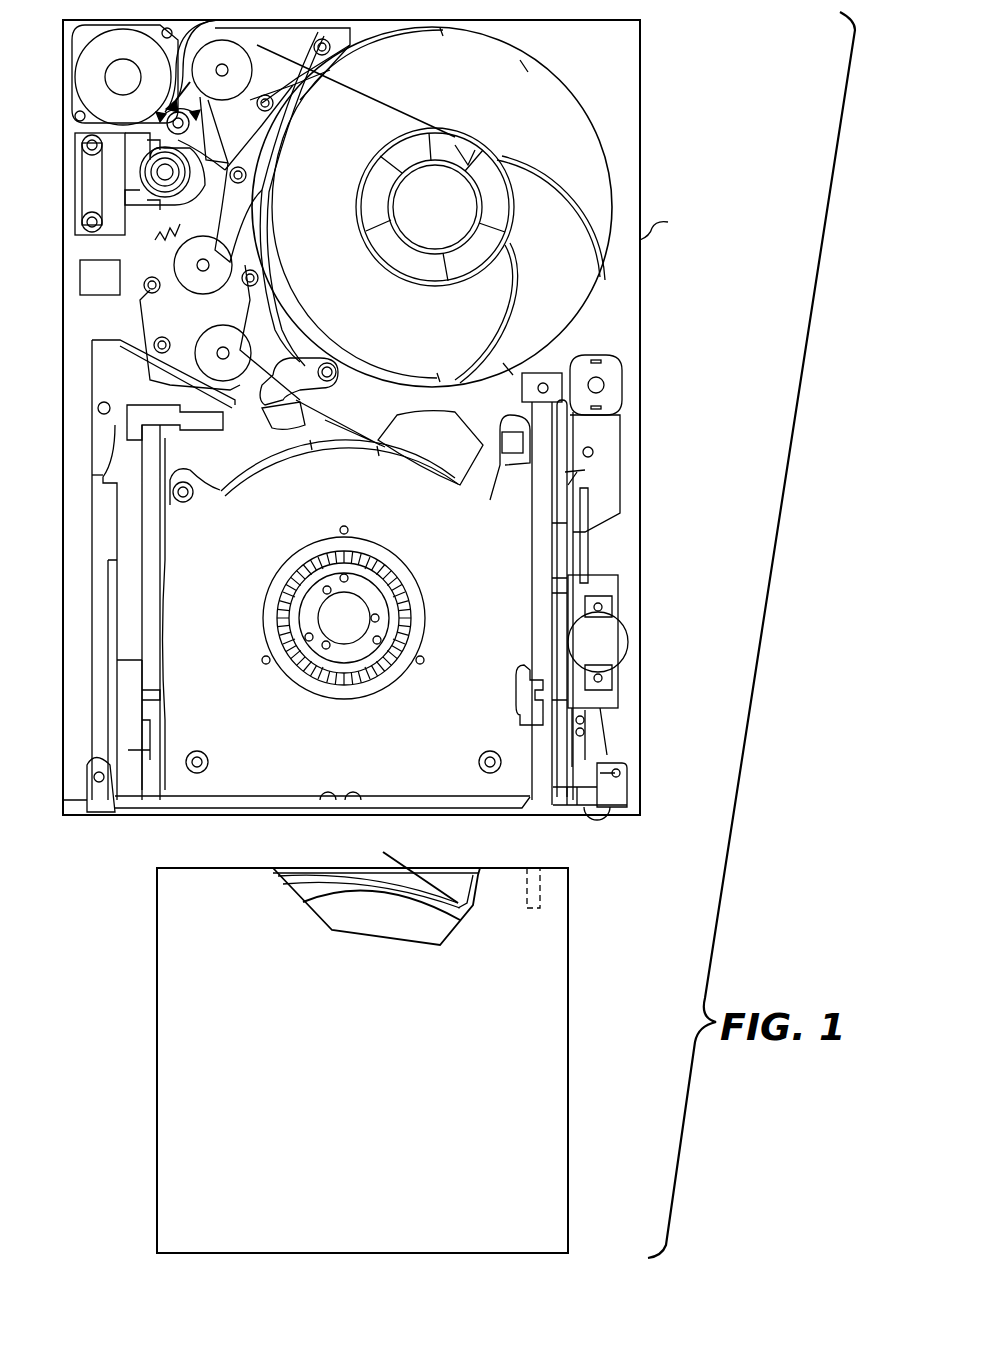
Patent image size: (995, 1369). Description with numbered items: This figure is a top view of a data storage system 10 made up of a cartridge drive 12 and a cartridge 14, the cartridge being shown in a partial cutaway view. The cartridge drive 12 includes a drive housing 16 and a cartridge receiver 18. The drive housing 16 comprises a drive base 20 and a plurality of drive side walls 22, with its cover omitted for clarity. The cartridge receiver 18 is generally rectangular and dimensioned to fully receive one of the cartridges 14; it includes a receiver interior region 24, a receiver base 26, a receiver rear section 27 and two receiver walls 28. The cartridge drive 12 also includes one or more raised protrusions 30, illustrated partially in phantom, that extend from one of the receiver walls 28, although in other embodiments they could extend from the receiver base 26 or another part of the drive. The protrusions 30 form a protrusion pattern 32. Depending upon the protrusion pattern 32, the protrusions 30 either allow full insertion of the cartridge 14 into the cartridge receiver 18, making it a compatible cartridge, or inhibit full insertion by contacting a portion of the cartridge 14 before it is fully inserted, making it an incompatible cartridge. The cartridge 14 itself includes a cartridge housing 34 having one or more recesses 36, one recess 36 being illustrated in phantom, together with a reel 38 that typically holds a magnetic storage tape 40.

The data storage system 10 is at (648, 830).
The cartridge drive 12 is at (640, 368).
The cartridge 14 is at (403, 1047).
The drive housing 16 is at (636, 620).
The cartridge receiver 18 is at (522, 788).
The drive base 20 is at (628, 52).
The drive side walls 22 is at (670, 250).
The receiver interior region 24 is at (212, 701).
The receiver base 26 is at (203, 632).
The receiver rear section 27 is at (322, 480).
The receiver walls 28 is at (137, 673).
The raised protrusions 30 is at (523, 442).
The protrusion pattern 32 is at (518, 468).
The cartridge housing 34 is at (570, 1000).
The recess 36 is at (542, 890).
The reel 38 is at (332, 918).
The magnetic storage tape 40 is at (450, 893).